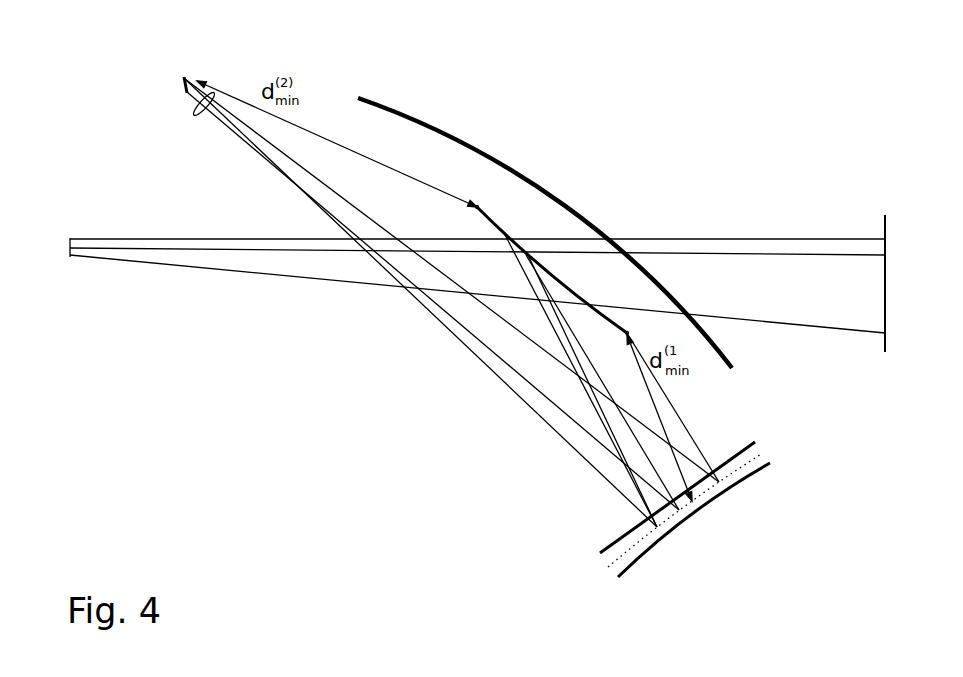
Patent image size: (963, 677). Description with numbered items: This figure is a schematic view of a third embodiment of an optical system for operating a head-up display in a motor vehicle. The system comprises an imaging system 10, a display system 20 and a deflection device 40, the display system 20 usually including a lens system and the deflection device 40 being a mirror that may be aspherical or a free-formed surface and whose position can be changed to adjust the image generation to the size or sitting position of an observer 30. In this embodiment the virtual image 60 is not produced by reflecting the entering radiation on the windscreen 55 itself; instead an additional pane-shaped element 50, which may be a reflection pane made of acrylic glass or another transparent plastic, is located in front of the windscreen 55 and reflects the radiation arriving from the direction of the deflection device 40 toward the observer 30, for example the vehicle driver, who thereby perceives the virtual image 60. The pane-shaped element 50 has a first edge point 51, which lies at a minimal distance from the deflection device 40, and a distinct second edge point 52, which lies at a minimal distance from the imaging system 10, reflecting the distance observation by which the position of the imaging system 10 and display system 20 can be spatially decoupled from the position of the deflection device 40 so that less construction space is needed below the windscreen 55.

The imaging system 10 is at (183, 85).
The display system 20 is at (197, 112).
The observer 30 is at (70, 257).
The deflection device 40 is at (750, 477).
The pane-shaped element 50 is at (500, 228).
The first edge point 51 is at (700, 330).
The second edge point 52 is at (480, 207).
The windscreen 55 is at (377, 94).
The virtual image 60 is at (885, 218).